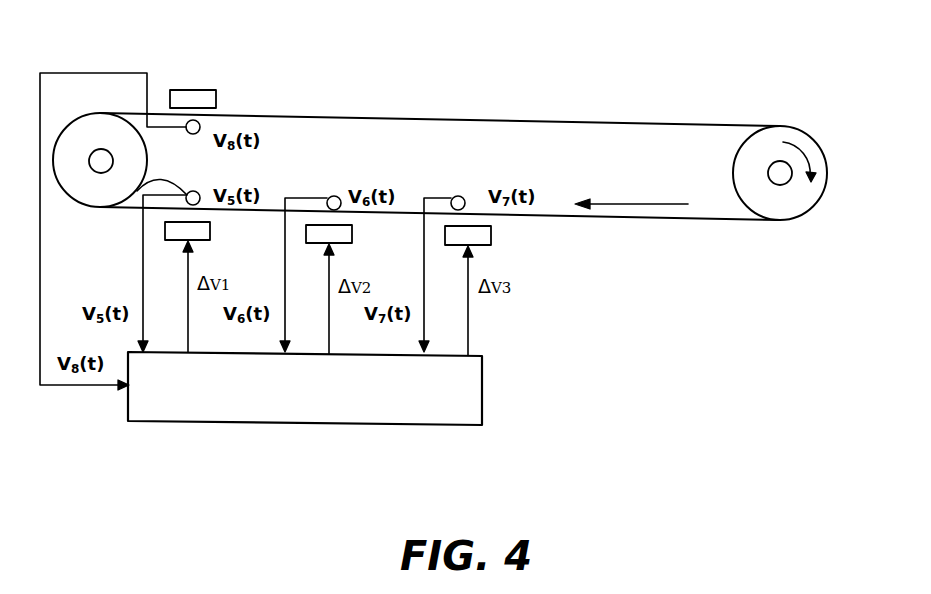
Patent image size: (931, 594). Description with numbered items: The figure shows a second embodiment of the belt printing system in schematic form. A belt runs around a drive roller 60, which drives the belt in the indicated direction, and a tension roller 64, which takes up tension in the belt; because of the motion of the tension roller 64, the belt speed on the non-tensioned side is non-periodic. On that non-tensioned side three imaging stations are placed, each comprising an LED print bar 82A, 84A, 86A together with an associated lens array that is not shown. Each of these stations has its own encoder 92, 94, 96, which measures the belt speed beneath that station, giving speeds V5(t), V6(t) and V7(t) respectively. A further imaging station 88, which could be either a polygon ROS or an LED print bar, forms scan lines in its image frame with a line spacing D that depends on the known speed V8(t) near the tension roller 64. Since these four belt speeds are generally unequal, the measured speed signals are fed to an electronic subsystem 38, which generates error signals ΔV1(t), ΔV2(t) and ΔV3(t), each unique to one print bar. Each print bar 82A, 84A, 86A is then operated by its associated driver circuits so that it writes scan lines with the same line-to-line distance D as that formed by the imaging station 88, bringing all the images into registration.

The electronic subsystem 38 is at (463, 383).
The drive roller 60 is at (802, 143).
The tension roller 64 is at (93, 130).
The LED print bar 82A is at (200, 229).
The LED print bar 84A is at (342, 235).
The LED print bar 86A is at (482, 233).
The imaging station 88 is at (195, 98).
The encoder 92 is at (141, 197).
The encoder 94 is at (330, 199).
The encoder 96 is at (462, 199).